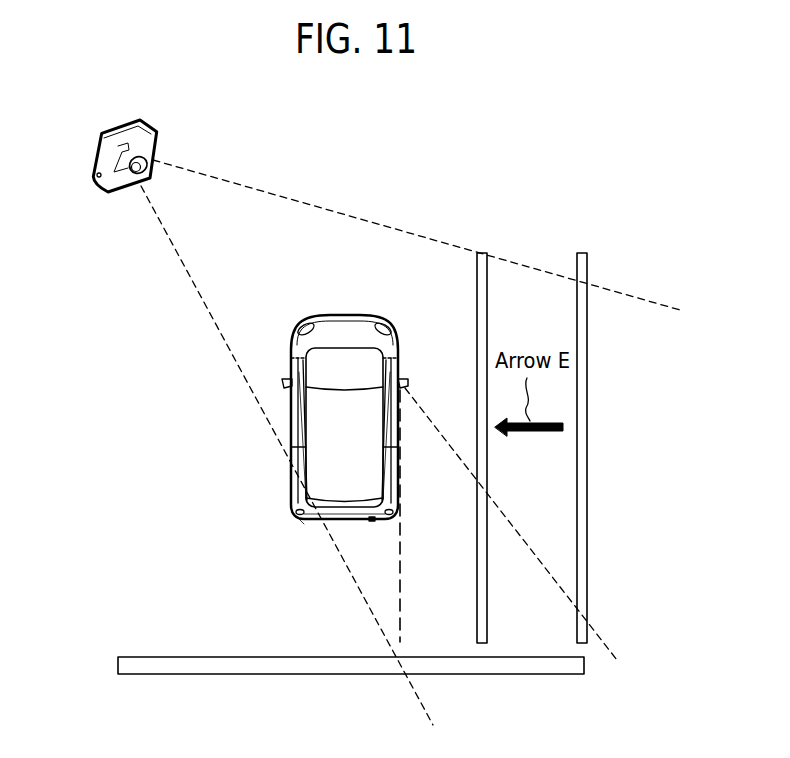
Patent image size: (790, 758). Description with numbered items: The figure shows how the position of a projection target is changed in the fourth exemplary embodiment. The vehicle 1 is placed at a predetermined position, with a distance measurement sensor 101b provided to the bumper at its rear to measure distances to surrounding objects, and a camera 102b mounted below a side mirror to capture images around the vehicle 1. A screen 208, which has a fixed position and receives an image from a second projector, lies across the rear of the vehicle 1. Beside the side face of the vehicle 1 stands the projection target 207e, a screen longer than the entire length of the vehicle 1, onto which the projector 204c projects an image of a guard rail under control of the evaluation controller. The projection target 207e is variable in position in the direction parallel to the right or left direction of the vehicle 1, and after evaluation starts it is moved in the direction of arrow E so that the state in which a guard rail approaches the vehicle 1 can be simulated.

The vehicle 1 is at (345, 333).
The distance measurement sensor 101b is at (372, 522).
The camera 102b is at (402, 382).
The projector 204c is at (107, 146).
The projection target 207e is at (487, 285).
The screen 208 is at (500, 674).